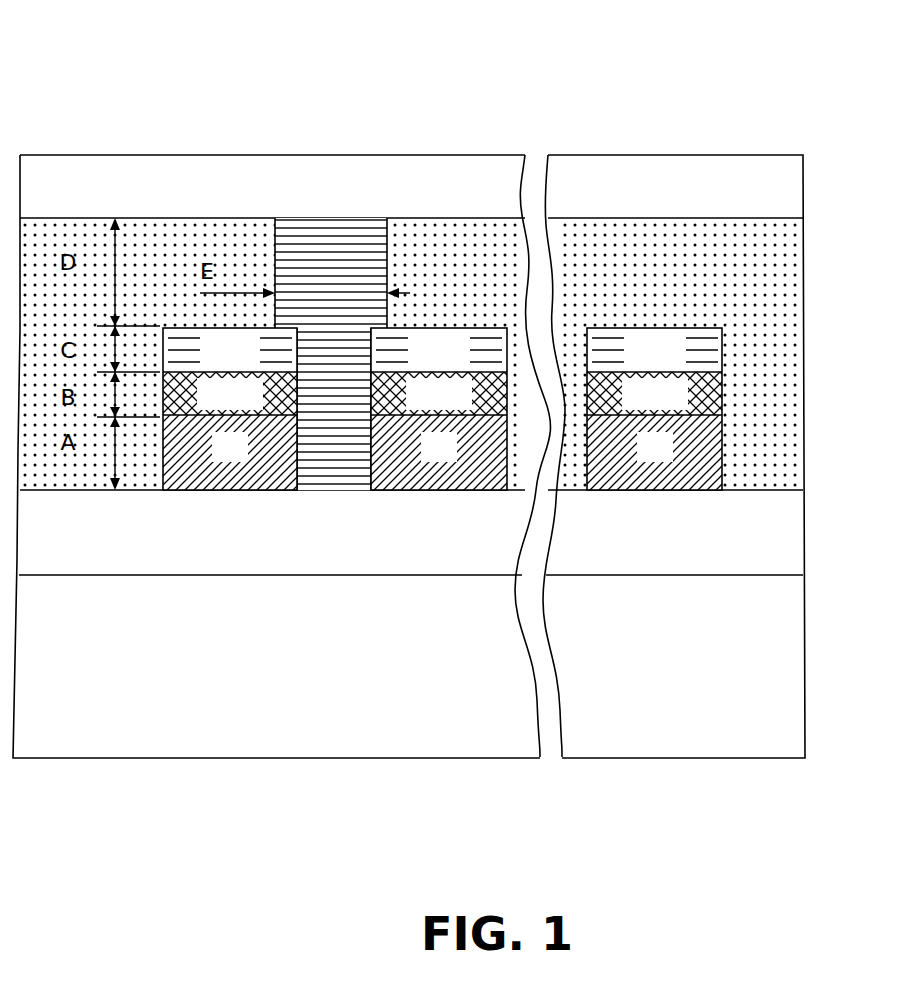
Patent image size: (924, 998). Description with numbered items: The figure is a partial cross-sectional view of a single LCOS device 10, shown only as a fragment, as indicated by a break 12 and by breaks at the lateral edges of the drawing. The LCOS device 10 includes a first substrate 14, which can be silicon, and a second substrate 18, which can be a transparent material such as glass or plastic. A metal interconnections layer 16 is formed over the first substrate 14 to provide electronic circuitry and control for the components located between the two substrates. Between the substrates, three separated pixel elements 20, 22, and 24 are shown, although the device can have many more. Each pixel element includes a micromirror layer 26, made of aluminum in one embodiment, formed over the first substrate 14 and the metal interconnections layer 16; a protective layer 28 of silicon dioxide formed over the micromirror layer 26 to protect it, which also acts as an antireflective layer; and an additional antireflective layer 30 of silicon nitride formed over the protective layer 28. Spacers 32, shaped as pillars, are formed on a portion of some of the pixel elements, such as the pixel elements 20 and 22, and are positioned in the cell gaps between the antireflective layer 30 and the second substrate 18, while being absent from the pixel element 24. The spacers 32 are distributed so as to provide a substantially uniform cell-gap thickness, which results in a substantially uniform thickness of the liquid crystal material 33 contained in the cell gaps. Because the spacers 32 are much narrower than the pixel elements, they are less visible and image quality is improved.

The LCOS device 10 is at (352, 76).
The break 12 is at (531, 160).
The first substrate 14 is at (400, 760).
The metal interconnections layer 16 is at (795, 540).
The second substrate 18 is at (782, 192).
The pixel element 20 is at (276, 497).
The pixel element 22 is at (478, 497).
The pixel element 24 is at (706, 497).
The micromirror layer 26 is at (722, 437).
The protective layer 28 is at (722, 390).
The antireflective layer 30 is at (722, 347).
The spacer 32 is at (300, 236).
The liquid crystal material 33 is at (473, 236).